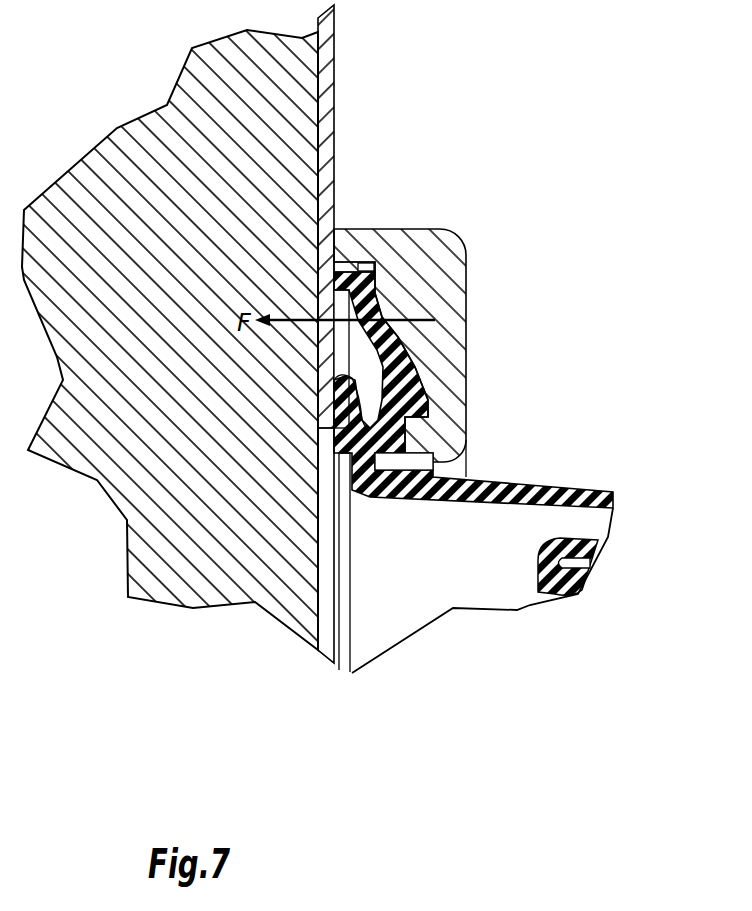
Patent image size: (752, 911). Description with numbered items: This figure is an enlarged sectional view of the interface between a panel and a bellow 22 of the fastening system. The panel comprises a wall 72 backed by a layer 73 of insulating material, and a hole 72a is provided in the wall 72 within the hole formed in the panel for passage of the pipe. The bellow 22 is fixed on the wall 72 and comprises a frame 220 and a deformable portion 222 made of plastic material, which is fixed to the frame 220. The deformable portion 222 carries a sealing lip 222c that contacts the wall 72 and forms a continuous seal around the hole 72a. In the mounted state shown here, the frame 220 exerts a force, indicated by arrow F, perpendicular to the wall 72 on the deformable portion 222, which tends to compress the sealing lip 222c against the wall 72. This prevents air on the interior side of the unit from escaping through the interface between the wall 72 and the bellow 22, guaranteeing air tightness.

The layer of insulating material 73 is at (160, 127).
The wall 72 is at (327, 105).
The hole 72a is at (326, 440).
The bellow 22 is at (478, 287).
The frame 220 is at (433, 250).
The deformable portion 222 is at (560, 497).
The sealing lip 222c is at (343, 400).